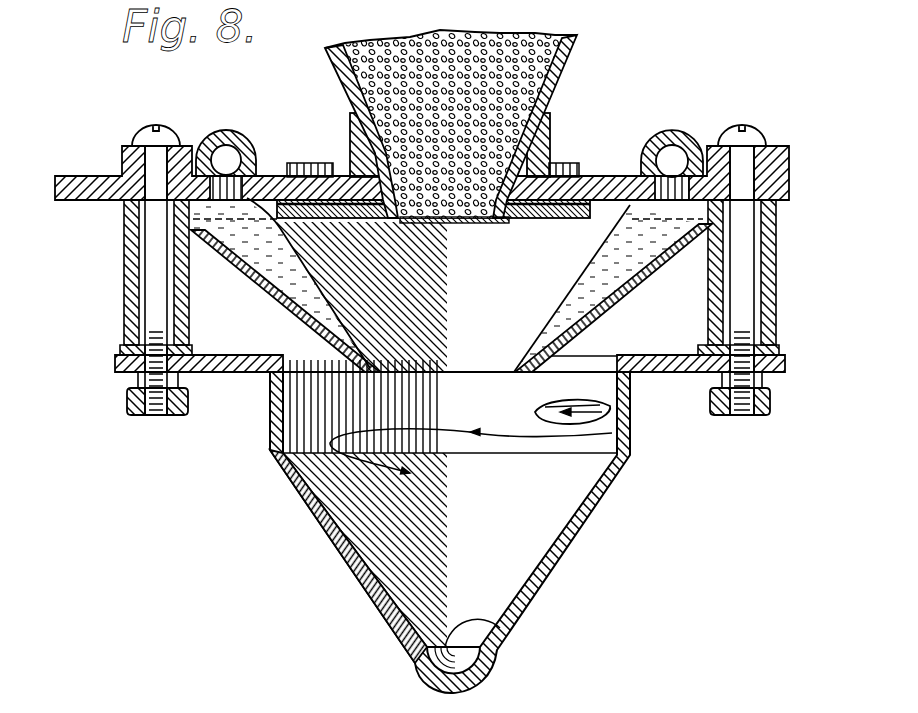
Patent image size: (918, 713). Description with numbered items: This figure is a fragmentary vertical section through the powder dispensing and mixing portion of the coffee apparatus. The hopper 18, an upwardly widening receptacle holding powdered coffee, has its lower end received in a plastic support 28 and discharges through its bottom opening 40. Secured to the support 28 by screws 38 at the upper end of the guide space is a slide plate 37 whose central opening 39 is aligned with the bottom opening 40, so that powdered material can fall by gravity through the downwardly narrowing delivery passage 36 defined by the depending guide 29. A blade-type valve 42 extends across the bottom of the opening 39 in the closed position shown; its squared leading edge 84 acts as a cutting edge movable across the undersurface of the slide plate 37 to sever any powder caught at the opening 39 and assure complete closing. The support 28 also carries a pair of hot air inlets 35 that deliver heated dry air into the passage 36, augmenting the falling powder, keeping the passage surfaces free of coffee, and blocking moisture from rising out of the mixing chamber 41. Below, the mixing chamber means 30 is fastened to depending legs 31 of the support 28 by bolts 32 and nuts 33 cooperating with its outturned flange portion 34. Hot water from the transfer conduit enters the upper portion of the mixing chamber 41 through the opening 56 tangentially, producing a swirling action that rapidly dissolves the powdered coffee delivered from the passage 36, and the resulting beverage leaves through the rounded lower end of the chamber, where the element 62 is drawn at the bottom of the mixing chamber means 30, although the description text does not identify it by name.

The hopper 18 is at (576, 47).
The plastic support 28 is at (553, 136).
The depending guide 29 is at (653, 275).
The mixing chamber means 30 is at (603, 492).
The depending legs 31 is at (124, 274).
The bolts 32 is at (122, 160).
The nuts 33 is at (128, 403).
The outturned flange portion 34 is at (680, 374).
The hot air inlets 35 is at (240, 135).
The delivery passage 36 is at (489, 308).
The slide plate 37 is at (612, 177).
The screws 38 is at (313, 163).
The central opening 39 is at (361, 297).
The bottom opening 40 is at (528, 104).
The mixing chamber 41 is at (480, 500).
The blade-type valve 42 is at (476, 224).
The opening 56 is at (610, 419).
The discharge outlet 62 is at (500, 630).
The leading edge 84 is at (526, 221).